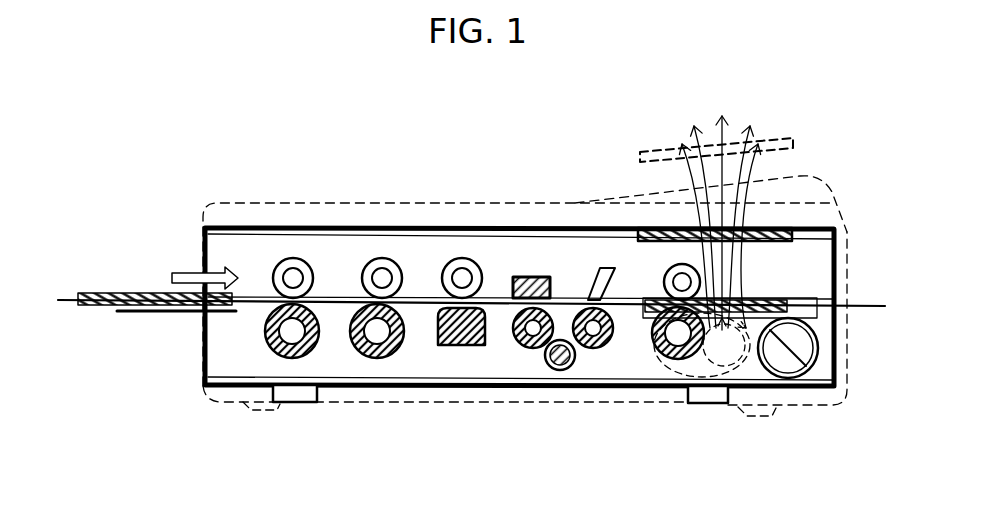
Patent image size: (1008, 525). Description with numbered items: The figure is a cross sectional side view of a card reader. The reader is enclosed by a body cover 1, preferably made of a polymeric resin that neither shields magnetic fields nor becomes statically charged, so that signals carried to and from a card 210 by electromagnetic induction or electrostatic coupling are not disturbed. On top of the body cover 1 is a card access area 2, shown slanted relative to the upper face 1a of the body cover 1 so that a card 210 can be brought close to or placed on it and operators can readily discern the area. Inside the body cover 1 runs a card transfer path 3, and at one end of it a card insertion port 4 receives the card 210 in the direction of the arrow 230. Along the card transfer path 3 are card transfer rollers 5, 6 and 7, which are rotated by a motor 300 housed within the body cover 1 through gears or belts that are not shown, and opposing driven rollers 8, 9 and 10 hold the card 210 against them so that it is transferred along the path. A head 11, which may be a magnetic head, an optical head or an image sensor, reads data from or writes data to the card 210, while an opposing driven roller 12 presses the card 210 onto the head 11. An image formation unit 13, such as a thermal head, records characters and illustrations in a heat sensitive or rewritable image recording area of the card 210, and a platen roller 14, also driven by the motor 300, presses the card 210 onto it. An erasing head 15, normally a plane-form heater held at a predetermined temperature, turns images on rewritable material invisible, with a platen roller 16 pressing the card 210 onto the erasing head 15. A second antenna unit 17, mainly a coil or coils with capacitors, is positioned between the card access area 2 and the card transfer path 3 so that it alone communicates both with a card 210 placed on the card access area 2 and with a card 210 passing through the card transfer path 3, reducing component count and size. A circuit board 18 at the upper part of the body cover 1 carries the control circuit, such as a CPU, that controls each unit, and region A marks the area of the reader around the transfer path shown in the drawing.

The body cover 1 is at (400, 203).
The upper face 1a is at (325, 202).
The card access area 2 is at (797, 178).
The card transfer path 3 is at (337, 313).
The card insertion port 4 is at (168, 312).
The card transfer roller 5 is at (290, 334).
The card transfer roller 6 is at (375, 336).
The card transfer roller 7 is at (676, 333).
The driven roller 8 is at (293, 258).
The driven roller 9 is at (382, 258).
The driven roller 10 is at (677, 265).
The head 11 is at (453, 347).
The driven roller 12 is at (462, 258).
The image formation unit 13 is at (527, 277).
The platen roller 14 is at (533, 332).
The erasing head 15 is at (600, 270).
The platen roller 16 is at (597, 336).
The second antenna unit 17 is at (663, 237).
The circuit board 18 is at (480, 227).
The card 210 is at (102, 293).
The arrow 230 is at (188, 268).
The motor 300 is at (785, 358).
The drying region A is at (773, 303).